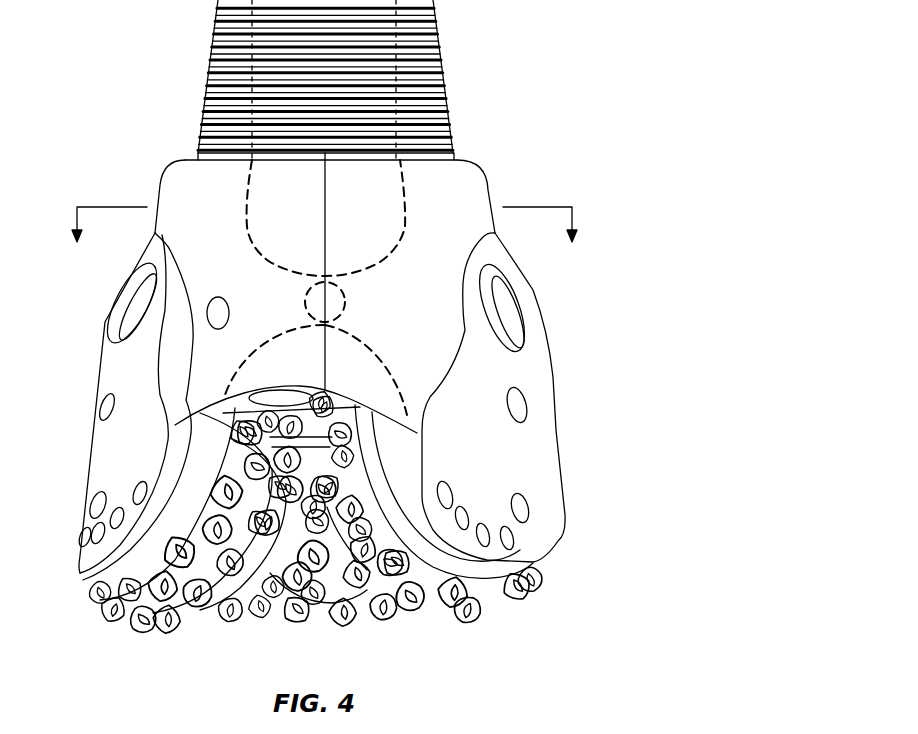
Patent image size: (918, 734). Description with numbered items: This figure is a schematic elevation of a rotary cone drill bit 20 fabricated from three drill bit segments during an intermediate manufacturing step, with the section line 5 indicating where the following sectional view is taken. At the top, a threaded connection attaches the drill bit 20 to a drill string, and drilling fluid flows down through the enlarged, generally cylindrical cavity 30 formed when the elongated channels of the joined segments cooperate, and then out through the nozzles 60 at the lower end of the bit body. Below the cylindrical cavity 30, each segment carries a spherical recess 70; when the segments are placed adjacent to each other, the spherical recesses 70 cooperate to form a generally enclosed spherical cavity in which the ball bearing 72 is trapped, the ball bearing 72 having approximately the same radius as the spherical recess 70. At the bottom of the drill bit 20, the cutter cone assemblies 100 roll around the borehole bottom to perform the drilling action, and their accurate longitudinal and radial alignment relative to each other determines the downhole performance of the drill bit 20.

The rotary cone drill bit 20 is at (510, 133).
The enlarged generally cylindrical cavity 30 is at (370, 193).
The nozzle 60 is at (270, 395).
The spherical recess 70 is at (343, 297).
The ball bearing 72 is at (307, 307).
The cutter cone assembly 100 is at (121, 631).
The section line 5- 5 is at (325, 243).